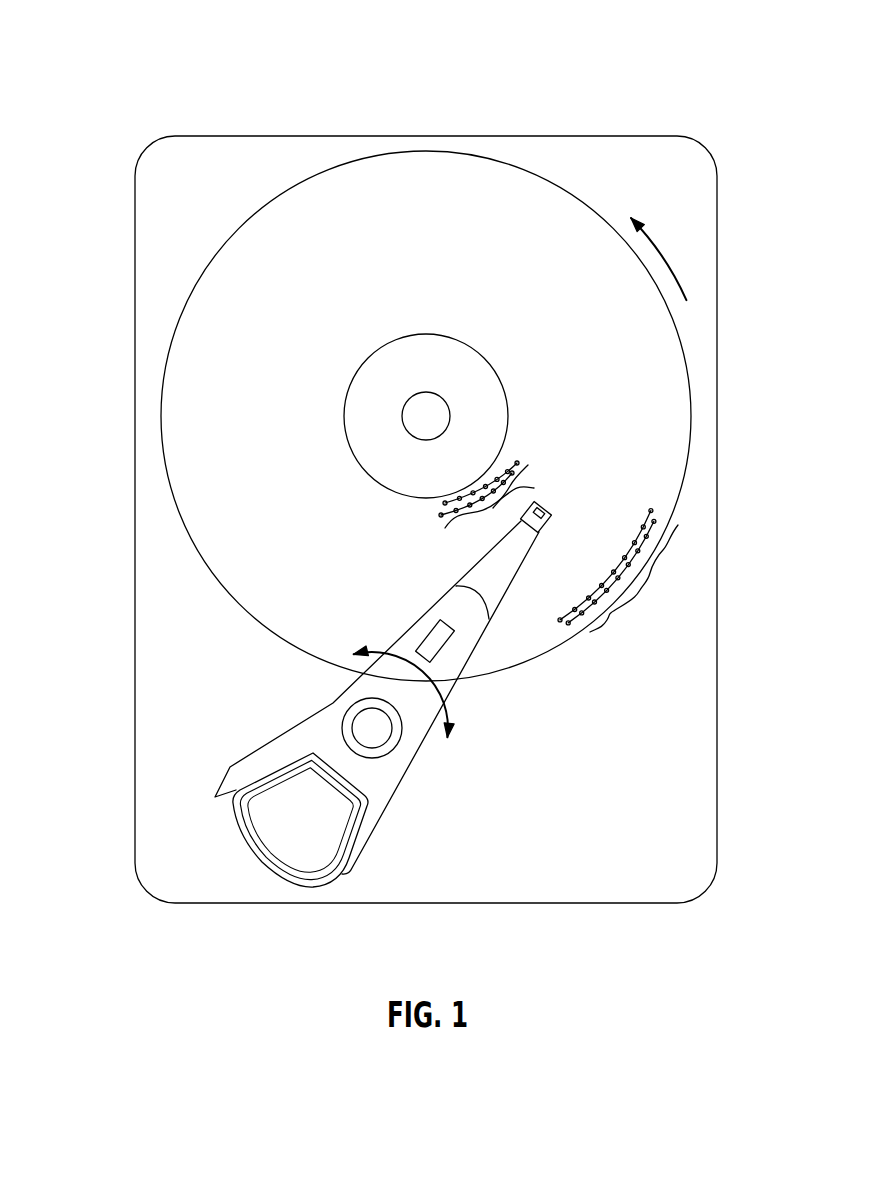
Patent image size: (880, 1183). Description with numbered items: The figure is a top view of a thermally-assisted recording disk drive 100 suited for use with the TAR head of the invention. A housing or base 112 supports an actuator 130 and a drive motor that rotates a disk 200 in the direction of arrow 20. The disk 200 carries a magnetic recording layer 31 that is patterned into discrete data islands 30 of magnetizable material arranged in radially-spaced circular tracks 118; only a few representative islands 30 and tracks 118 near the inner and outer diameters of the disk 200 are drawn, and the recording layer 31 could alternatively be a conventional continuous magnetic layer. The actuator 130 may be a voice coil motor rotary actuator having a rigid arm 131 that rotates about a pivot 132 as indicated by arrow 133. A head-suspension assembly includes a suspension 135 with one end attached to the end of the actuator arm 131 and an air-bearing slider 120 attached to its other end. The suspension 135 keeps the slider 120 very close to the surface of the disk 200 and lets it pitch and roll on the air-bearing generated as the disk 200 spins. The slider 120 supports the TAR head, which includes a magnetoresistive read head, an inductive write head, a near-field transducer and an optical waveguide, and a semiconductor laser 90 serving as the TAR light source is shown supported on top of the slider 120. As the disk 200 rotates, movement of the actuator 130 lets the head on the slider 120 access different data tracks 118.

The thermally-assisted recording disk drive 100 is at (135, 57).
The housing or base 112 is at (645, 136).
The disk 200 is at (288, 190).
The arrow 20 is at (658, 237).
The magnetic recording layer 31 is at (668, 378).
The circular tracks 118 is at (433, 499).
The data islands 30 is at (561, 548).
The semiconductor laser 90 is at (552, 512).
The air-bearing slider 120 is at (545, 528).
The actuator 130 is at (223, 782).
The rigid arm 131 is at (413, 632).
The pivot 132 is at (364, 724).
The arrow 133 is at (450, 710).
The suspension 135 is at (468, 584).